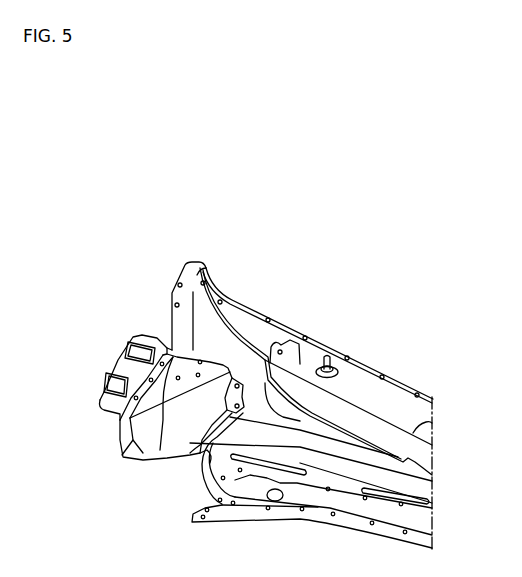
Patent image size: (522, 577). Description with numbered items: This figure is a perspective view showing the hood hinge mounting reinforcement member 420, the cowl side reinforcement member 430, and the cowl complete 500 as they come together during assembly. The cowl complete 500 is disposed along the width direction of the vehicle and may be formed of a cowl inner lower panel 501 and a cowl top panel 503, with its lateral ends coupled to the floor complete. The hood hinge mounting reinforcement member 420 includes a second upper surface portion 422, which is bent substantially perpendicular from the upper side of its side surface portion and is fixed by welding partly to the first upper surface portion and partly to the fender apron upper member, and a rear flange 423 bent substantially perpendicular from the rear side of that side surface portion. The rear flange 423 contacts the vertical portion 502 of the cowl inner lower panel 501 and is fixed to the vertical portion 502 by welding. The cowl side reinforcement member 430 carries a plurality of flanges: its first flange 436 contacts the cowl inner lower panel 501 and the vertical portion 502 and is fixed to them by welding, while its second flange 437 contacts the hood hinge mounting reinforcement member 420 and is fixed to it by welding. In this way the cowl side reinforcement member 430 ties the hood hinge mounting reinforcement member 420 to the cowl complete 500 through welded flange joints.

The hood hinge mounting reinforcement member 420 is at (105, 365).
The second upper surface portion 422 is at (117, 362).
The rear flange 423 is at (175, 346).
The cowl side reinforcement member 430 is at (133, 467).
The first flange 436 is at (198, 462).
The second flange 437 is at (128, 337).
The cowl complete 500 is at (434, 455).
The cowl inner lower panel 501 is at (430, 482).
The vertical portion 502 is at (258, 380).
The cowl top panel 503 is at (364, 365).